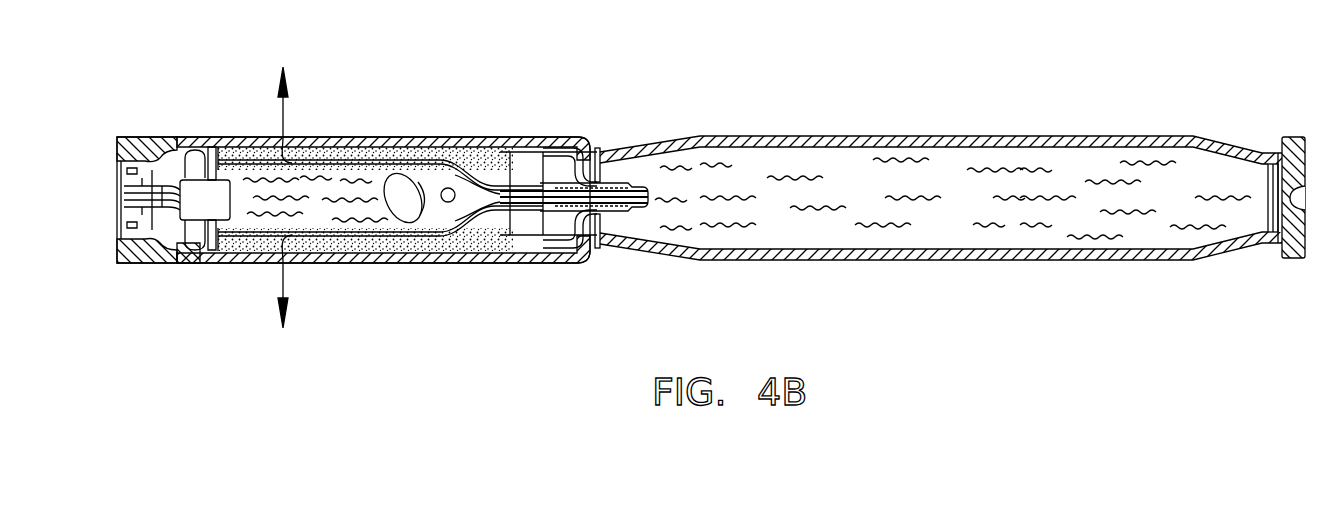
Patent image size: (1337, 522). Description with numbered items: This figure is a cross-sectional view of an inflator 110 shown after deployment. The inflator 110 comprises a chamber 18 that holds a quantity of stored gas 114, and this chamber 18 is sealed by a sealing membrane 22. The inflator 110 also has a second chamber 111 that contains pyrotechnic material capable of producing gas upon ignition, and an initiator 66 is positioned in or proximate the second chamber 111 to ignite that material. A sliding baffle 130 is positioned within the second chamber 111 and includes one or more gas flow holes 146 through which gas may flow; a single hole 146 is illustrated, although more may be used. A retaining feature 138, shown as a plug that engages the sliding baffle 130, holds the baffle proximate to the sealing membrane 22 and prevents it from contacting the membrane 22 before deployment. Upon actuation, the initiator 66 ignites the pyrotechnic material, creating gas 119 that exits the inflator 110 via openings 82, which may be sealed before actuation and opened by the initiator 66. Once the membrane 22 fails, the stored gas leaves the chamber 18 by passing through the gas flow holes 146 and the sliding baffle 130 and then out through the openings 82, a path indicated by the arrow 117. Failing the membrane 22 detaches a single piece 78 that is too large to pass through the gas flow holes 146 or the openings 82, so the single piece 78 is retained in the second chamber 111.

The initiator 66 is at (203, 200).
The openings 82 is at (273, 138).
The gas 119 is at (362, 200).
The single piece 78 is at (447, 188).
The arrow 117 is at (498, 160).
The sliding baffle 130 is at (558, 178).
The gas flow hole 146 is at (618, 182).
The stored gas 114 is at (983, 172).
The retaining feature 138 is at (403, 200).
The second chamber 111 is at (473, 227).
The sealing membrane 22 is at (597, 226).
The inflator 110 is at (835, 270).
The chamber 18 is at (947, 226).